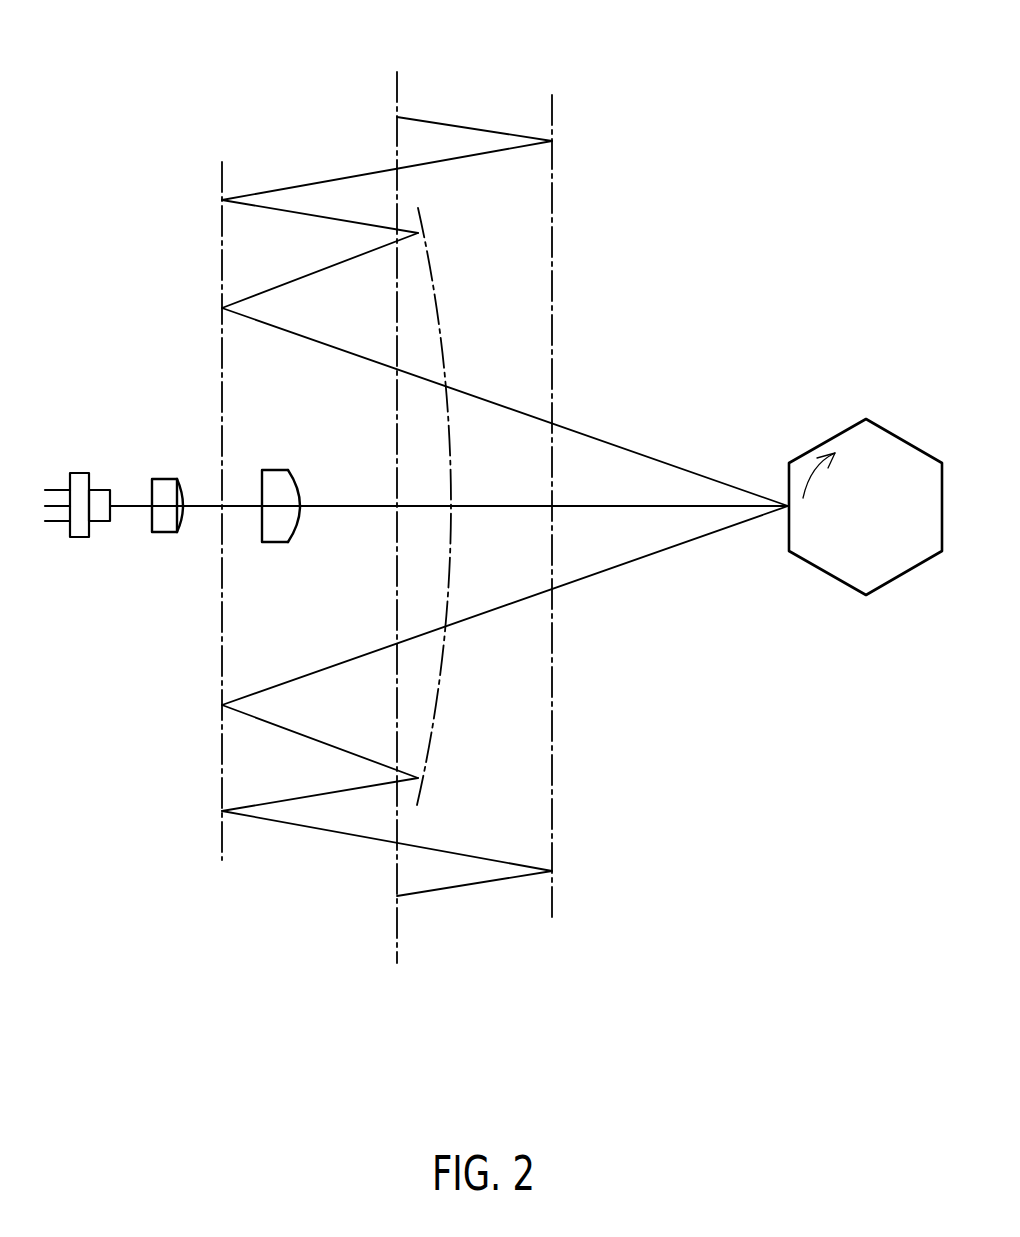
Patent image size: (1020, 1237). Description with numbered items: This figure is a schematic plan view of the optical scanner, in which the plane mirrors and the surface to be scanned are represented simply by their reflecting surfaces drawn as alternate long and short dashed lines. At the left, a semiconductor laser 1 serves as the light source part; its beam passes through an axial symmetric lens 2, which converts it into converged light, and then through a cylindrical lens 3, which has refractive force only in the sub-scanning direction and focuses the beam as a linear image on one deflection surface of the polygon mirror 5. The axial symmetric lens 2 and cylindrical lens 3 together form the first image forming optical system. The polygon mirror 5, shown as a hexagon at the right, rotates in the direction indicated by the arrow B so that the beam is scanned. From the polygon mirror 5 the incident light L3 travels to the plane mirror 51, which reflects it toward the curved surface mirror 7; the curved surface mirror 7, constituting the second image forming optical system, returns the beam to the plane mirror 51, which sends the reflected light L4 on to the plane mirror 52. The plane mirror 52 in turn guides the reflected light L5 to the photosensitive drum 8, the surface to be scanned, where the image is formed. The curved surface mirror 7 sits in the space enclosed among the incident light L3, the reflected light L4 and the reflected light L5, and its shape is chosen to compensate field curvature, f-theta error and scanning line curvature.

The semiconductor laser 1 is at (80, 545).
The axial symmetric lens 2 is at (165, 540).
The cylindrical lens 3 is at (275, 545).
The polygon mirror 5 is at (905, 437).
The curved surface mirror 7 is at (438, 312).
The photosensitive drum 8 is at (397, 80).
The plane mirror 51 is at (222, 248).
The plane mirror 52 is at (553, 233).
The incident light L3 is at (635, 563).
The reflected light L4 is at (300, 185).
The reflected light L5 is at (475, 127).
The arrow B is at (812, 448).